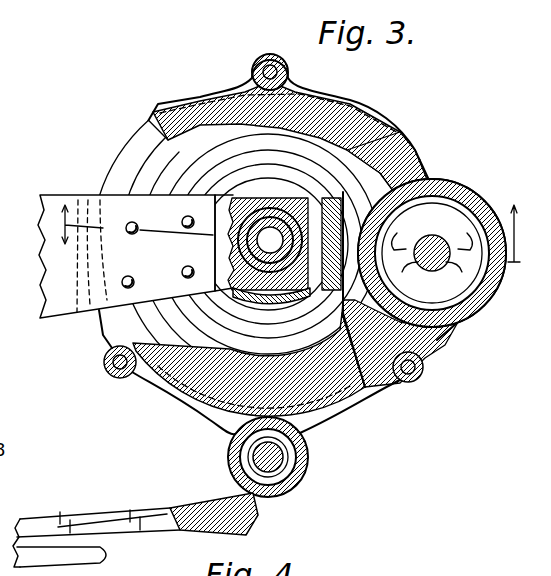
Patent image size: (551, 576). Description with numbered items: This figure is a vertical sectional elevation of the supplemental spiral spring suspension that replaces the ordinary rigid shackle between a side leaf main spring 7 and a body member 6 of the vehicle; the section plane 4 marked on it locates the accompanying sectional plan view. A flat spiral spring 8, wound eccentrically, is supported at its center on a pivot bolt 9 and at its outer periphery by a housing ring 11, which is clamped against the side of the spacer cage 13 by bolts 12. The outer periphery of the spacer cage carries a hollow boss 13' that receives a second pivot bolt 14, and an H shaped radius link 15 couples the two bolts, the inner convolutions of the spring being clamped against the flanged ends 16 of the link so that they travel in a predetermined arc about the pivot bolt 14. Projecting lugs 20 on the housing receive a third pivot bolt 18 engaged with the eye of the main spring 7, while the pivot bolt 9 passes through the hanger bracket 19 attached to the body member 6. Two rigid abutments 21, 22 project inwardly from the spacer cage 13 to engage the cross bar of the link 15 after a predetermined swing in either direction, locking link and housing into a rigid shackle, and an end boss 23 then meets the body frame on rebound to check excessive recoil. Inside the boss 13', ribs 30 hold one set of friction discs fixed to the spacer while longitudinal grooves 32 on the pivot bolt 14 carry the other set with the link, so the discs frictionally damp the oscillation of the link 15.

The section plane 4— 4 is at (281, 222).
The body member 6 is at (67, 313).
The side leaf main spring 7 is at (85, 516).
The flat spiral spring 8 is at (170, 150).
The pivot bolt 9 is at (270, 240).
The housing ring 11 is at (122, 166).
The bolt 12 is at (256, 68).
The spacer cage 13 is at (290, 131).
The boss 13' is at (432, 241).
The pivot bolt 14 is at (432, 262).
The H shaped radius link 15 is at (310, 174).
The flanged end 16 is at (276, 297).
The pivot bolt 18 is at (296, 467).
The hanger bracket 19 is at (229, 241).
The projecting lug 20 is at (220, 432).
The stop abutment 21 is at (356, 388).
The stop abutment 22 is at (388, 152).
The end boss 23 is at (106, 362).
The rib 30 is at (432, 253).
The longitudinal groove 32 is at (427, 262).